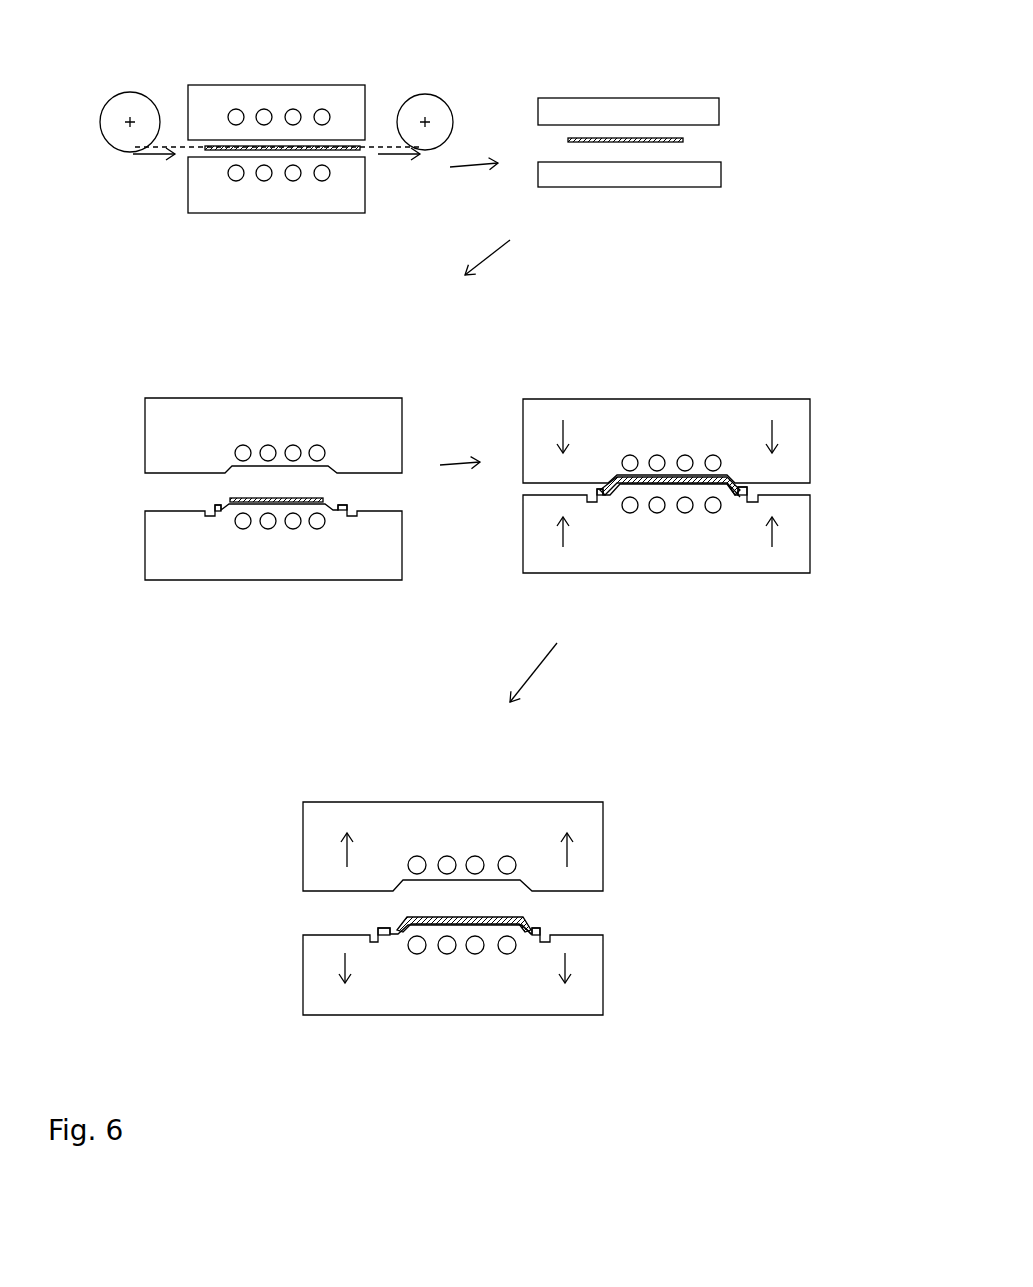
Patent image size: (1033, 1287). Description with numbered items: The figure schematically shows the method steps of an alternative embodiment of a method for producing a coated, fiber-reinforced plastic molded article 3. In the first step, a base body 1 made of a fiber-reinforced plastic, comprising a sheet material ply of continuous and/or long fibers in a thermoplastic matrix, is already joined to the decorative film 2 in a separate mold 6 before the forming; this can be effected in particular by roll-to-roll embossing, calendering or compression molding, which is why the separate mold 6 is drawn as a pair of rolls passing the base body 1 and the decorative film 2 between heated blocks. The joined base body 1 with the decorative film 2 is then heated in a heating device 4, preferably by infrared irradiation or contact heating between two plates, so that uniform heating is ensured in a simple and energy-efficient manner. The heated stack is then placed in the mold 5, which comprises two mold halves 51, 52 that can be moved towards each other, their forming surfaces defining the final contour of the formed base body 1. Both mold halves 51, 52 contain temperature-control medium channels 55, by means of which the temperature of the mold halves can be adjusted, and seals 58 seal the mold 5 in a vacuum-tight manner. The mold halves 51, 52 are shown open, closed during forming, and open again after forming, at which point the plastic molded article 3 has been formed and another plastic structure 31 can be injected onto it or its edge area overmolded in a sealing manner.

The base body 1 is at (340, 150).
The decorative film 2 is at (166, 145).
The plastic molded article 3 is at (720, 477).
The heating device 4 is at (676, 76).
The mold 5 is at (181, 360).
The separate mold 6 is at (337, 50).
The plastic structure 31 is at (722, 490).
The mold half 51 is at (157, 435).
The mold half 52 is at (157, 552).
The temperature-control medium channels 55 is at (271, 449).
The seals 58 is at (214, 515).